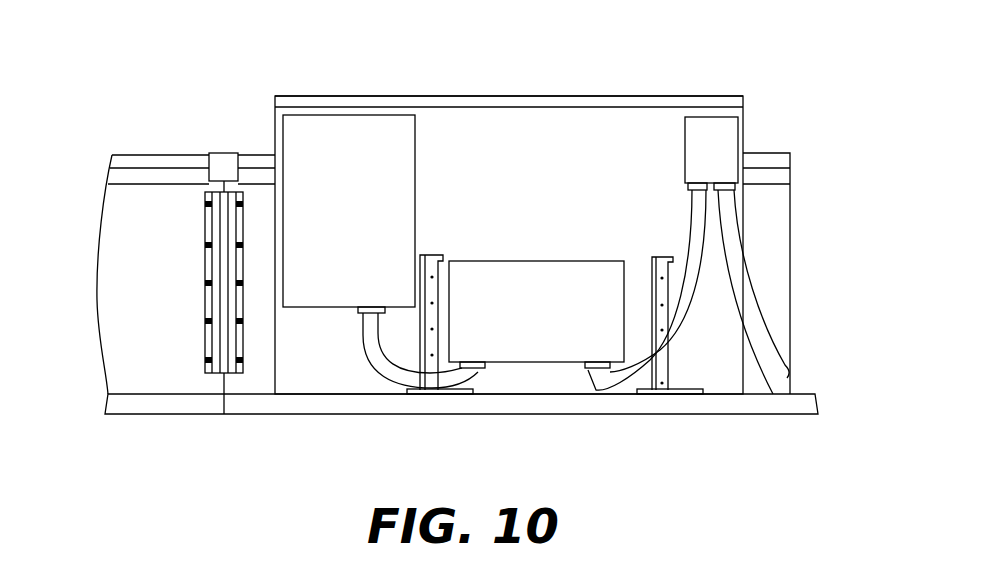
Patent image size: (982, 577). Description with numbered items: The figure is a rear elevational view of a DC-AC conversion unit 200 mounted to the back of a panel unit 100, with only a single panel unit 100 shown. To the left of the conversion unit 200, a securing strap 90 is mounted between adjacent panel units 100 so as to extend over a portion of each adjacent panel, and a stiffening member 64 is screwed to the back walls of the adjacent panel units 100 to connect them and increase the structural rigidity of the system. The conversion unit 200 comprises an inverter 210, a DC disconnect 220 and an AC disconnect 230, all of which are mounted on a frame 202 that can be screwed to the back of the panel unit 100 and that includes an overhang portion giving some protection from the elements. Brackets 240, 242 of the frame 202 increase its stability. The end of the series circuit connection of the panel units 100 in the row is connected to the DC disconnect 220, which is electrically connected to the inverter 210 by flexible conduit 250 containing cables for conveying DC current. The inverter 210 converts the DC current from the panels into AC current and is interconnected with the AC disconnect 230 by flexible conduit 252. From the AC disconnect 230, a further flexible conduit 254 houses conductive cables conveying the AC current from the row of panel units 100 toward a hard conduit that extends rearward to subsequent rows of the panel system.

The panel unit 100 is at (125, 140).
The securing strap 90 is at (225, 158).
The stiffening member 64 is at (223, 222).
The DC-AC conversion unit 200 is at (640, 75).
The frame 202 is at (462, 96).
The DC disconnect 220 is at (355, 159).
The AC disconnect 230 is at (695, 148).
The inverter 210 is at (562, 294).
The bracket 240 is at (434, 277).
The bracket 242 is at (655, 262).
The flexible conduit 250 is at (372, 343).
The flexible conduit 252 is at (670, 337).
The flexible conduit 254 is at (740, 312).